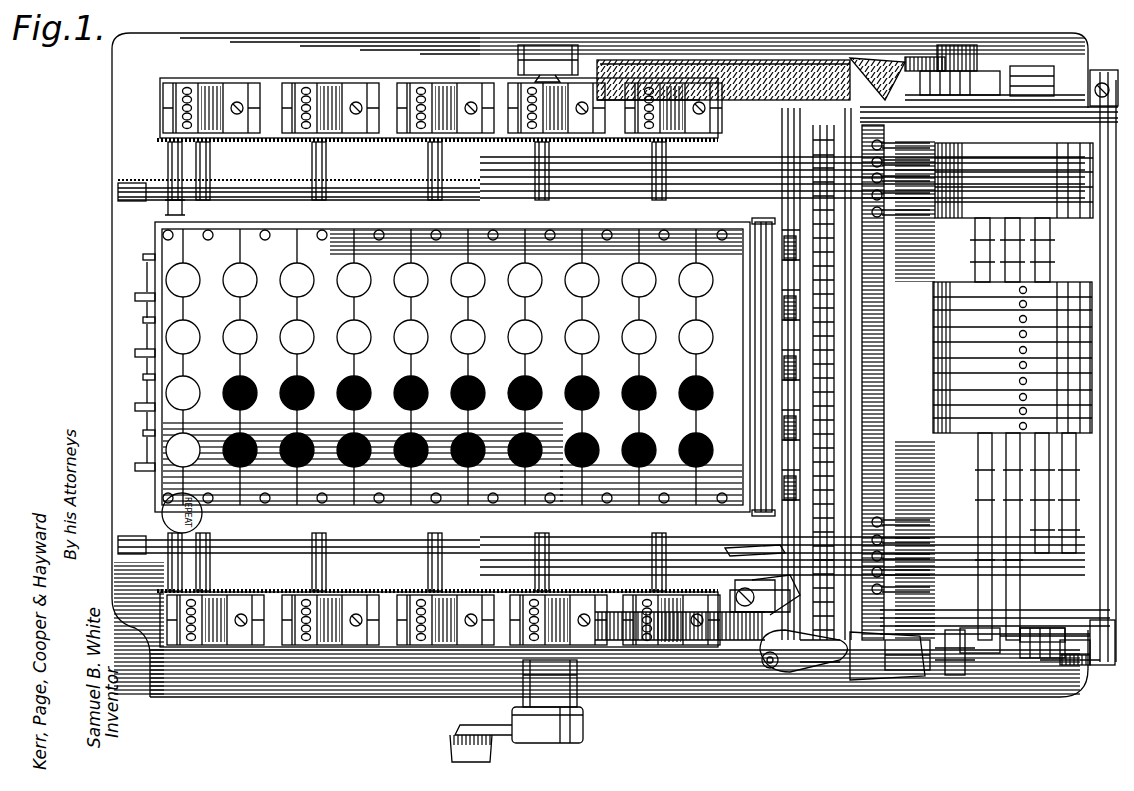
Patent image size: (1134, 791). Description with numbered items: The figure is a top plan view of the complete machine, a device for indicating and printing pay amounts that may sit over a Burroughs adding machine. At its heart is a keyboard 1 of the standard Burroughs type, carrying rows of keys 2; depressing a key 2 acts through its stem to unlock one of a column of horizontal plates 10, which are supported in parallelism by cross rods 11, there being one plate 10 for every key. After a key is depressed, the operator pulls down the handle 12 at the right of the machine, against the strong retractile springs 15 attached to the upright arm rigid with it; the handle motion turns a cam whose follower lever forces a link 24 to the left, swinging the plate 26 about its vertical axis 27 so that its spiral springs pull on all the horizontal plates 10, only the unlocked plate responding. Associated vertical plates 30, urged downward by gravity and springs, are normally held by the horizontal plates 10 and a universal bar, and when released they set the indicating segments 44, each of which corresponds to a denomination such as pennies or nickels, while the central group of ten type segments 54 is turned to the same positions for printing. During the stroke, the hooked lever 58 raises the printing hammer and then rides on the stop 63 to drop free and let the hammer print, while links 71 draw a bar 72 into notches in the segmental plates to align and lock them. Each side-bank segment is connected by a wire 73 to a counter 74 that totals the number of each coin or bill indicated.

The keyboard 1 is at (452, 367).
The keys 2 is at (533, 330).
The horizontal plates 10 is at (837, 450).
The cross rods 11 is at (800, 400).
The handle 12 is at (512, 740).
The retractile springs 15 is at (757, 68).
The link 24 is at (810, 665).
The plate 26 is at (775, 605).
The vertical axis 27 is at (743, 607).
The vertical plates 30 is at (902, 423).
The indicating segments 44 is at (968, 220).
The type segments 54 is at (970, 413).
The lever 58 is at (1072, 664).
The stop 63 is at (962, 680).
The links 71 is at (1062, 640).
The bar 72 is at (1088, 484).
The wire 73 is at (762, 533).
The counter 74 is at (400, 83).